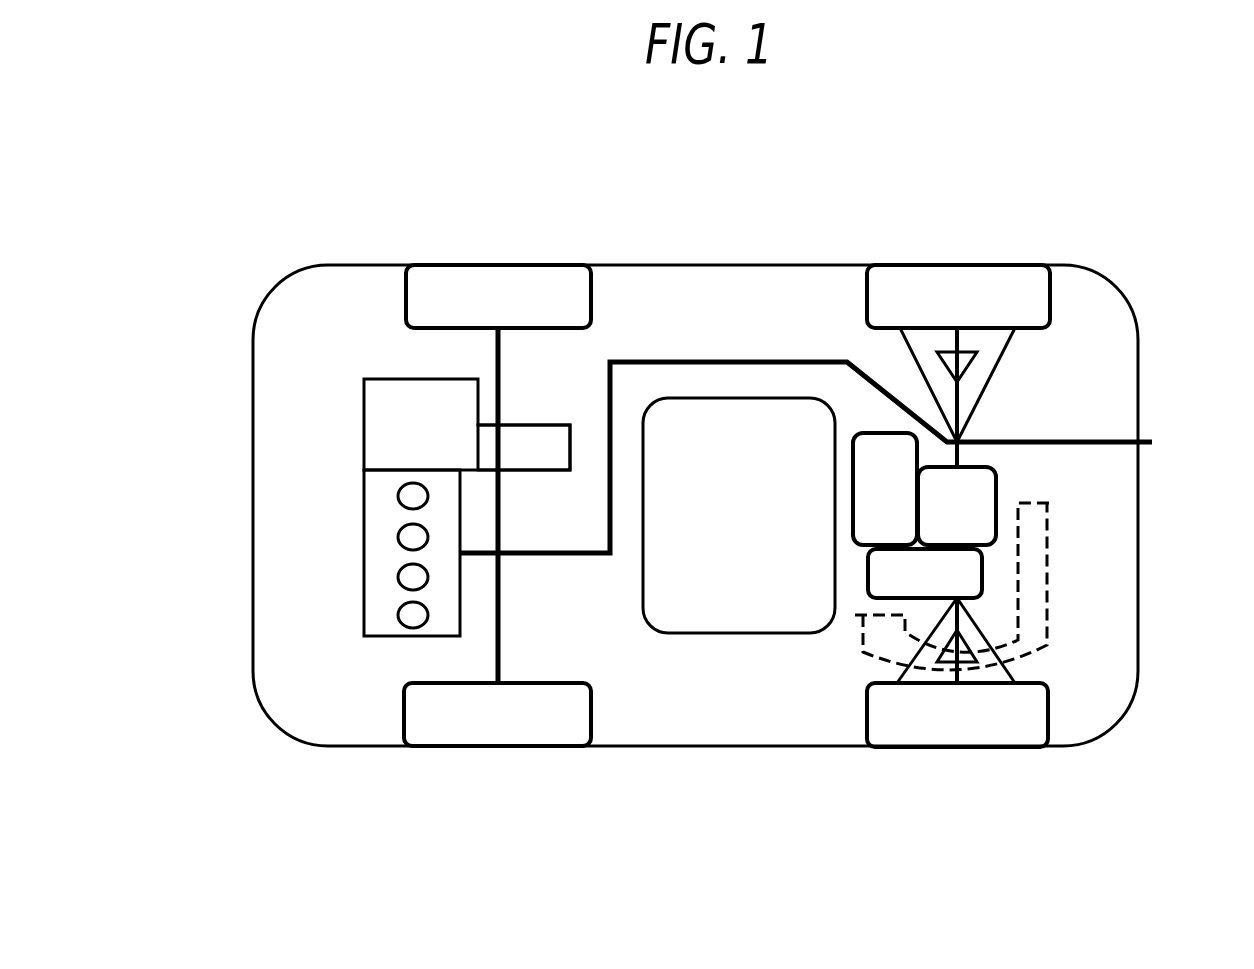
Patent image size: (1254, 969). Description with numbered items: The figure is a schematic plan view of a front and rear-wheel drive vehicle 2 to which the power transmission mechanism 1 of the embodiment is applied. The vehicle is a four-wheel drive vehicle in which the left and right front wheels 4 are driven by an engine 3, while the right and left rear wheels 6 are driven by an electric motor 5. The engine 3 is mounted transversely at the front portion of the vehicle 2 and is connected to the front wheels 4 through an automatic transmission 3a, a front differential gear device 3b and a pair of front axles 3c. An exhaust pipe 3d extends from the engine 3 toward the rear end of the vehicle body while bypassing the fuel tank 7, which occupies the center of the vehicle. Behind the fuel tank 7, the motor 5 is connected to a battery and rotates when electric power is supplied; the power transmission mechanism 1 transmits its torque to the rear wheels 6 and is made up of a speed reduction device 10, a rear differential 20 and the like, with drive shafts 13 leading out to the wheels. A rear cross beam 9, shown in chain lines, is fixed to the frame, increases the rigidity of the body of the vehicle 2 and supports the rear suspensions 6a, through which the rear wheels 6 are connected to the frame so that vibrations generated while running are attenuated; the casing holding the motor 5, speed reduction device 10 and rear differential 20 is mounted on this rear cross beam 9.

The power transmission mechanism 1 is at (1150, 228).
The front and rear-wheel drive vehicle 2 is at (772, 265).
The engine 3 is at (363, 588).
The automatic transmission 3a is at (363, 423).
The front differential gear device 3b is at (537, 435).
The front axles 3c is at (496, 350).
The exhaust pipe 3d is at (684, 360).
The front wheels 4 is at (597, 283).
The electric motor 5 is at (853, 488).
The rear wheels 6 is at (1050, 297).
The rear suspensions 6a is at (990, 372).
The fuel tank 7 is at (697, 638).
The rear cross beam 9 is at (1050, 585).
The speed reduction device 10 is at (868, 568).
The drive shaft 13 is at (947, 397).
The rear differential 20 is at (996, 478).